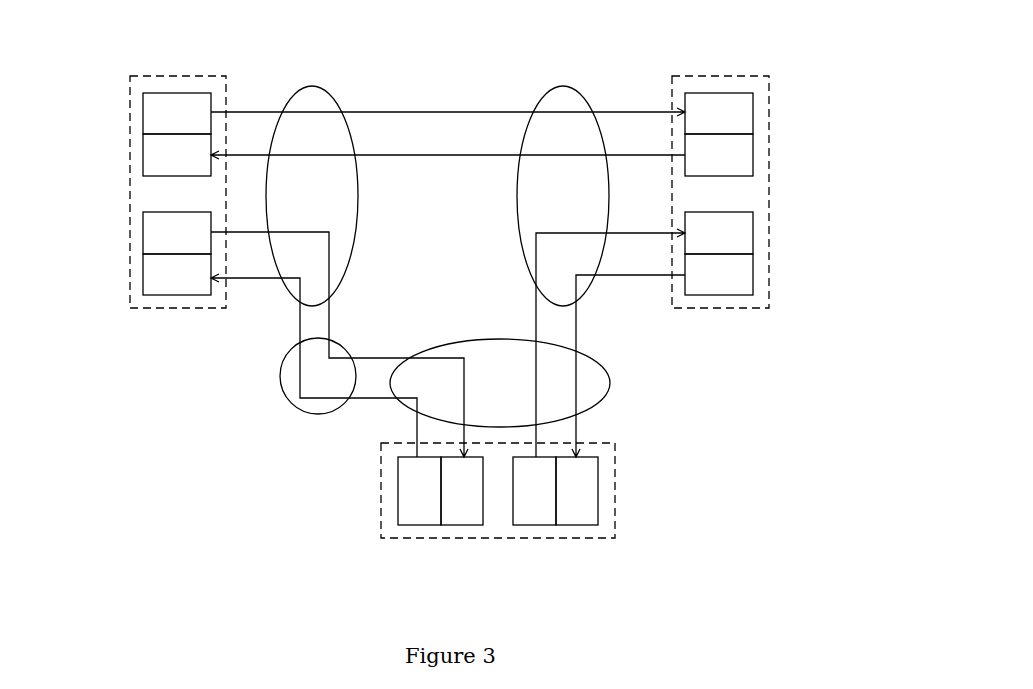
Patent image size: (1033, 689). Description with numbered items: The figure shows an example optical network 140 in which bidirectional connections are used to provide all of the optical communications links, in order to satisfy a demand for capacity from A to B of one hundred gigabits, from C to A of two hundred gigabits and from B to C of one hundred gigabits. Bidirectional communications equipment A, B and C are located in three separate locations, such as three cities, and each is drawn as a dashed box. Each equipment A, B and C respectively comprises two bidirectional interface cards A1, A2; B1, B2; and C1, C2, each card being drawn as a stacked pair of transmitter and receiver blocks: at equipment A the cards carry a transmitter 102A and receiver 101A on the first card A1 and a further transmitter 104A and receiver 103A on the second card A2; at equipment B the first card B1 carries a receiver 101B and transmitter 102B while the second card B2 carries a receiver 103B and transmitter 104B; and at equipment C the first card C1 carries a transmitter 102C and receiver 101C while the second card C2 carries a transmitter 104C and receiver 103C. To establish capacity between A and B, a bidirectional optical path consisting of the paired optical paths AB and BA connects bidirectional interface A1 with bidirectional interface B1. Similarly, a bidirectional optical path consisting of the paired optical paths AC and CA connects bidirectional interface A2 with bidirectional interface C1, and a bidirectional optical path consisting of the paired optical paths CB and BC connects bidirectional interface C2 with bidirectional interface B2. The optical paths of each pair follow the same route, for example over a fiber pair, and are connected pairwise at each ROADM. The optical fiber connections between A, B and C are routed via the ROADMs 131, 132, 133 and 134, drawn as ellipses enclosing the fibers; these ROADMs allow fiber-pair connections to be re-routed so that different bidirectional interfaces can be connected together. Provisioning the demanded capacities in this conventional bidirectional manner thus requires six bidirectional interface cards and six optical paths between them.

The optical network 140 is at (457, 72).
The bidirectional communications equipment A is at (138, 310).
The bidirectional interface card A1 is at (163, 92).
The bidirectional interface card A2 is at (162, 295).
The receiver 101A is at (143, 160).
The transmitter 102A is at (143, 118).
The second receiver of node A 103A is at (143, 280).
The second transmitter of node A 104A is at (143, 232).
The bidirectional communications equipment B is at (768, 88).
The bidirectional interface card B1 is at (712, 92).
The bidirectional interface card B2 is at (717, 295).
The receiver 101B is at (753, 112).
The transmitter 102B is at (753, 162).
The second receiver of node B 103B is at (753, 232).
The second transmitter of node B 104B is at (753, 282).
The bidirectional communications equipment C is at (617, 508).
The bidirectional interface card C1 is at (398, 490).
The bidirectional interface card C2 is at (598, 478).
The receiver 101C is at (468, 525).
The transmitter 102C is at (422, 525).
The second receiver of node C 103C is at (583, 525).
The second transmitter of node C 104C is at (536, 525).
The optical path AB is at (247, 110).
The optical path BA is at (414, 164).
The optical path AC is at (375, 357).
The optical path CA is at (370, 398).
The optical path CB is at (533, 320).
The optical path BC is at (615, 275).
The ROADM 131 is at (336, 100).
The ROADM 132 is at (550, 95).
The ROADM 133 is at (610, 393).
The ROADM 134 is at (298, 410).